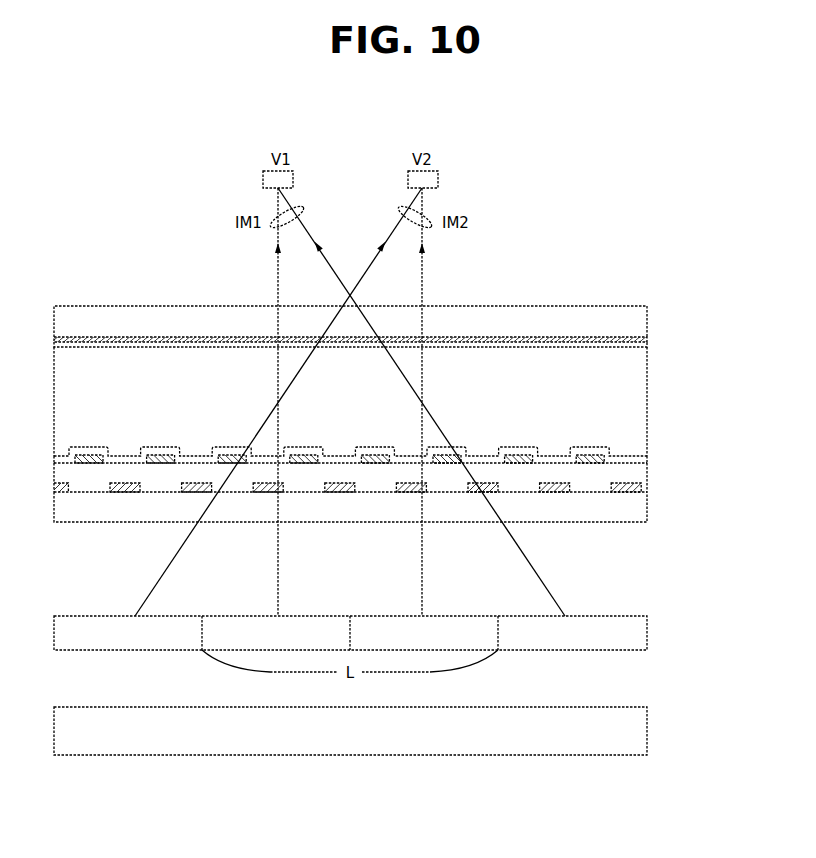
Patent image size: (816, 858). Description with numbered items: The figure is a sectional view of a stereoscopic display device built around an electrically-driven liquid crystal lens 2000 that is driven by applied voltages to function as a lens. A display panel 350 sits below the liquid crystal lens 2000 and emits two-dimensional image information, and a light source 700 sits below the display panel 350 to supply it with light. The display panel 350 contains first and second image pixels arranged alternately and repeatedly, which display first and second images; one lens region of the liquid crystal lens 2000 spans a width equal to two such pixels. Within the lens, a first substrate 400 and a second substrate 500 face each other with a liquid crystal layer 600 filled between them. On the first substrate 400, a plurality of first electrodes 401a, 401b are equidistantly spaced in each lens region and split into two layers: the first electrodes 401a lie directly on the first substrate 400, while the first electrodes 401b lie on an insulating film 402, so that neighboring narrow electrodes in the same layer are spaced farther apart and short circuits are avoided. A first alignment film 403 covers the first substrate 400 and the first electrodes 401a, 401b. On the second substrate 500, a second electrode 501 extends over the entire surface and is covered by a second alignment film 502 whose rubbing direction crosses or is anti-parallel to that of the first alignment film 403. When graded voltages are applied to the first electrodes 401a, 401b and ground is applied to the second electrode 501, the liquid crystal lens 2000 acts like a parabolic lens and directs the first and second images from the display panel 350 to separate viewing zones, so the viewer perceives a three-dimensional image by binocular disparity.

The electrically-driven liquid crystal lens 2000 is at (410, 435).
The second substrate 500 is at (649, 322).
The second electrode 501 is at (649, 340).
The second alignment film 502 is at (649, 347).
The liquid crystal layer 600 is at (649, 402).
The first alignment film 403 is at (649, 462).
The insulating film 402 is at (649, 483).
The first substrate 400 is at (381, 509).
The first electrodes 401a is at (553, 493).
The first electrodes 401b is at (590, 464).
The display panel 350 is at (649, 633).
The light source 700 is at (649, 733).